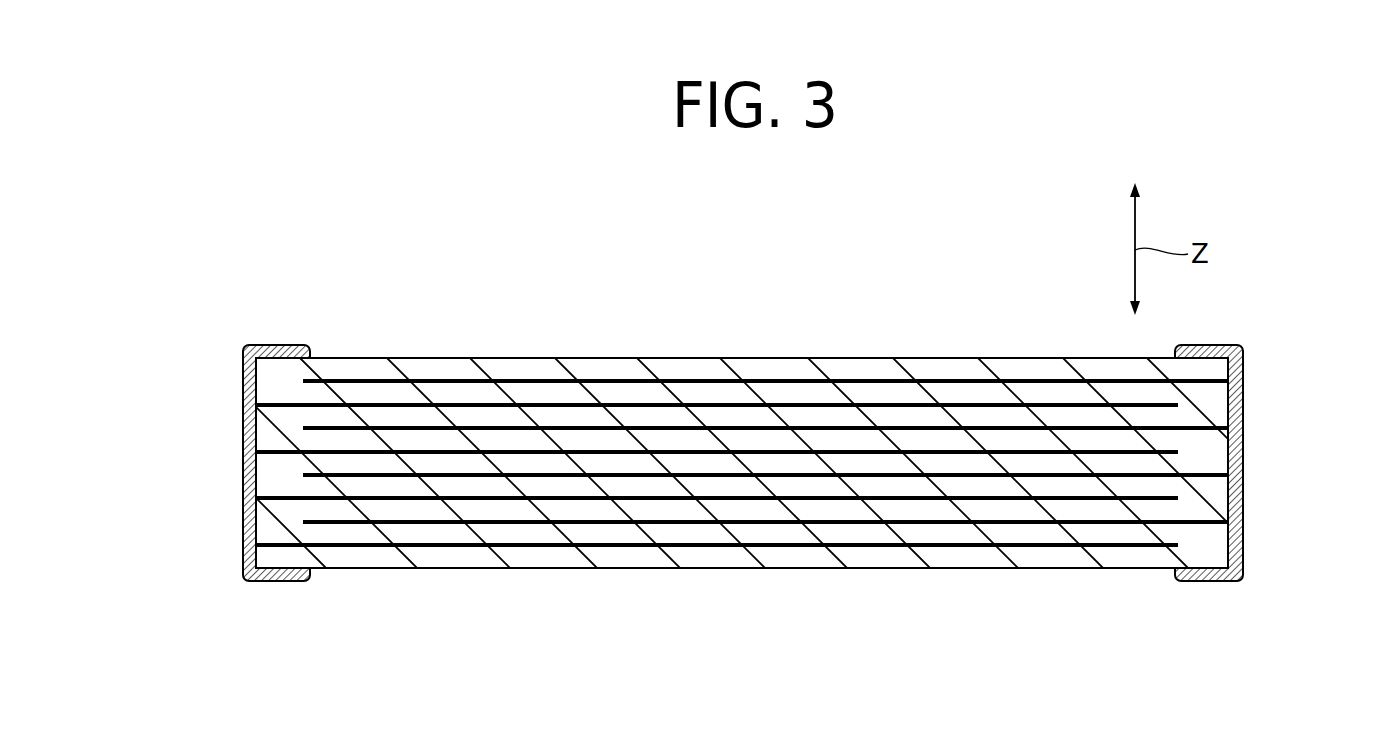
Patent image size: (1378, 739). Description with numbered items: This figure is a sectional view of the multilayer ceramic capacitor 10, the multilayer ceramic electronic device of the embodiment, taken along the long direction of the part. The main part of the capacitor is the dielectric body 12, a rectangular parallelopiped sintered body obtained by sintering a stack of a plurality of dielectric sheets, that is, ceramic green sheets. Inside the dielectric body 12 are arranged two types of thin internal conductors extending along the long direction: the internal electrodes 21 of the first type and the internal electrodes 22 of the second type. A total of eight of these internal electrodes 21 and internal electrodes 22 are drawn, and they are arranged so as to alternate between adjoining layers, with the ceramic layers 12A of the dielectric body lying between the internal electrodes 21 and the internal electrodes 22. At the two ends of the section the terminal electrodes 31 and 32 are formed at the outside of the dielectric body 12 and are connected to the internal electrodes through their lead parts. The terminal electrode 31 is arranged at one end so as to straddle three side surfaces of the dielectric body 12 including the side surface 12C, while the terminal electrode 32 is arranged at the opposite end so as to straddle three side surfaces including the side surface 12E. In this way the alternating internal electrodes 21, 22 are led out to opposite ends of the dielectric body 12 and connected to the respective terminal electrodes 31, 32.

The multilayer ceramic capacitor 10 is at (737, 426).
The dielectric body 12 is at (737, 435).
The ceramic layers 12A is at (1050, 440).
The side surface 12C is at (1243, 400).
The side surface 12E is at (242, 388).
The internal electrodes 21 is at (606, 428).
The internal electrodes 22 is at (747, 452).
The terminal electrode 31 is at (1243, 540).
The terminal electrode 32 is at (243, 545).